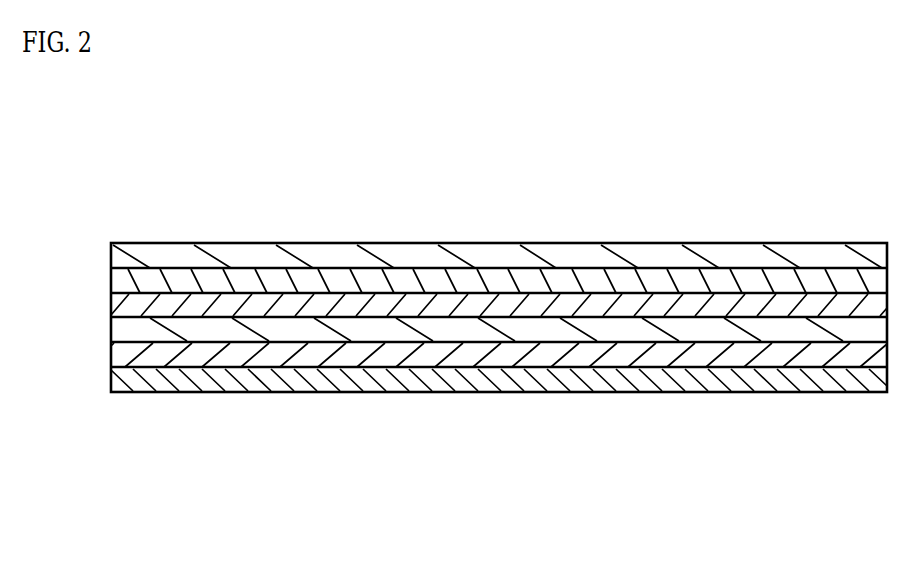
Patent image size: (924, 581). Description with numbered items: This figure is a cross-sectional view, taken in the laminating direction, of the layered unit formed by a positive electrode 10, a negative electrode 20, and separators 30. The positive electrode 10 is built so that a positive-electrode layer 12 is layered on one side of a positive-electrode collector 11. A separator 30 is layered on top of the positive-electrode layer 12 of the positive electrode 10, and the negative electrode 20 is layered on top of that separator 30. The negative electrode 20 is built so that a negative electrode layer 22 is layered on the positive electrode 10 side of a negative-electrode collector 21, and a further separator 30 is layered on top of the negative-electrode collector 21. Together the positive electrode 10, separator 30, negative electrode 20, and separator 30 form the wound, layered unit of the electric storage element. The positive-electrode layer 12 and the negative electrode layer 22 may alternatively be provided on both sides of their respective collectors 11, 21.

The positive electrode 10 is at (499, 452).
The positive-electrode collector 11 is at (311, 392).
The positive-electrode layer 12 is at (375, 350).
The negative electrode 20 is at (499, 195).
The negative-electrode collector 21 is at (655, 282).
The negative electrode layer 22 is at (725, 298).
The separator 30 is at (453, 252).